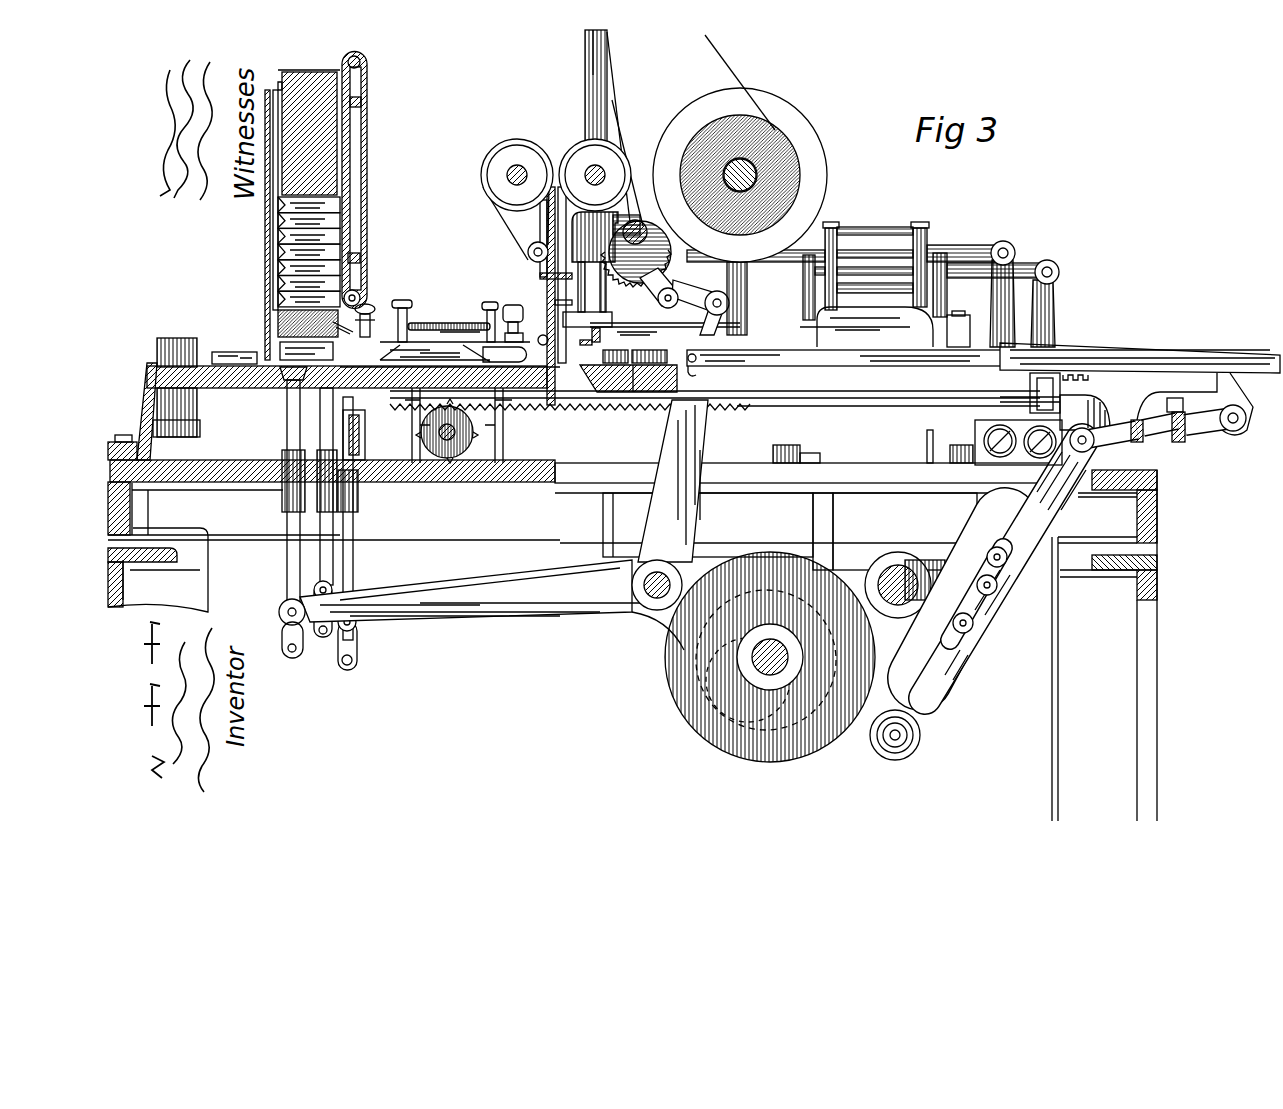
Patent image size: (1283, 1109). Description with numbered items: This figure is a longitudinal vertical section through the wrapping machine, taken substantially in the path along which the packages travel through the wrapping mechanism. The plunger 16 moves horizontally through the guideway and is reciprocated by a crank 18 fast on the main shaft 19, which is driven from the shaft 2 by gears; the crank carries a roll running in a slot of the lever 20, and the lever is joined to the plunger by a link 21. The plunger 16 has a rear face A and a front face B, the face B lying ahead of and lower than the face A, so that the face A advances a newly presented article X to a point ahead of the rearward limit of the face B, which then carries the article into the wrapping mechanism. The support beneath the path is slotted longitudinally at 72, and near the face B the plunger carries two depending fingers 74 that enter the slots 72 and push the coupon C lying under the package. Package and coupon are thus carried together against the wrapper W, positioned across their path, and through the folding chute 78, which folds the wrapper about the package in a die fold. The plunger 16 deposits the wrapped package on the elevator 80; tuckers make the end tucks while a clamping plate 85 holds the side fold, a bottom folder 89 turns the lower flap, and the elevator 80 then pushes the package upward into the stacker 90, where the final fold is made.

The shaft 2 is at (380, 305).
The plunger 16 is at (1113, 348).
The crank 18 is at (938, 565).
The shaft 19 is at (899, 570).
The lever 20 is at (997, 625).
The link 21 is at (1200, 437).
The slots 72 is at (636, 375).
The depending fingers 74 is at (695, 374).
The folding chute 78 is at (423, 352).
The elevator 80 is at (288, 380).
The clamping plate 85 is at (255, 388).
The bottom folder 89 is at (340, 372).
The stacker 90 is at (322, 162).
The rear plunger face A is at (1020, 336).
The front plunger face B is at (688, 358).
The coupon C is at (597, 358).
The wrapper W is at (551, 397).
The article X is at (617, 352).